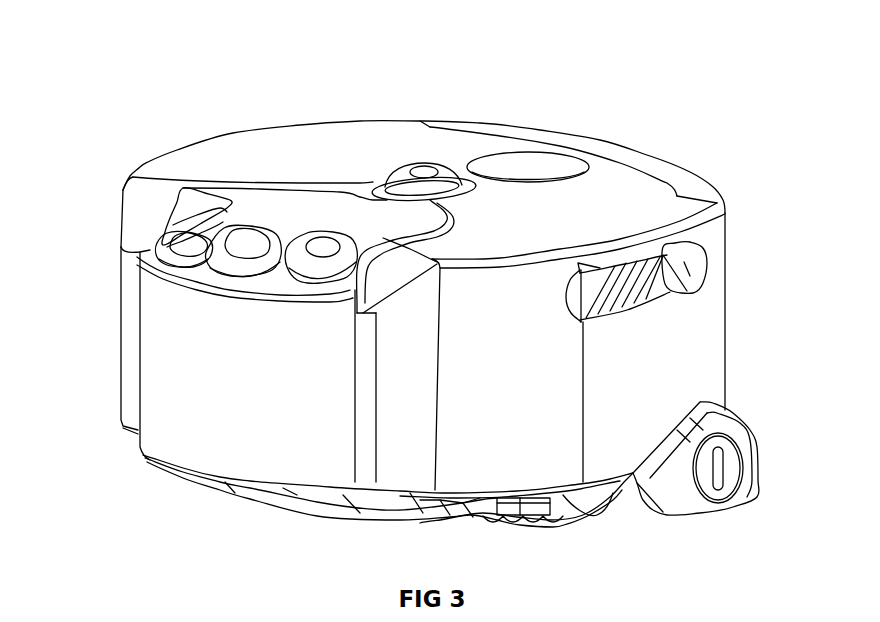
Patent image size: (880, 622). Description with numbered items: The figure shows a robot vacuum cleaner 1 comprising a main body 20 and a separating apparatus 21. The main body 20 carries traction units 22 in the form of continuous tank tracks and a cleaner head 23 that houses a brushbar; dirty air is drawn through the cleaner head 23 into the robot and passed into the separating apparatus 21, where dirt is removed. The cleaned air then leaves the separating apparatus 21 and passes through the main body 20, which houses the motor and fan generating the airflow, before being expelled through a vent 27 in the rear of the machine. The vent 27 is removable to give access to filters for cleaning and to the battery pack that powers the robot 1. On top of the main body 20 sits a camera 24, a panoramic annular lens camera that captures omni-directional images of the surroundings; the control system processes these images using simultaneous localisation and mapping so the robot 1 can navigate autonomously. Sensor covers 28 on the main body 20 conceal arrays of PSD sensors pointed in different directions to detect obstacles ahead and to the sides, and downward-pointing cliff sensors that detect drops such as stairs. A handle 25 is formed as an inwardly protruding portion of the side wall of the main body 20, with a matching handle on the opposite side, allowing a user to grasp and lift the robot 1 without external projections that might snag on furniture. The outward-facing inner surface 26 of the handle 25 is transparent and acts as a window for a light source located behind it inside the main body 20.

The robot vacuum cleaner 1 is at (133, 108).
The main body 20 is at (357, 140).
The separating apparatus 21 is at (200, 420).
The traction units 22 is at (560, 527).
The cleaner head 23 is at (751, 452).
The camera 24 is at (440, 182).
The handle 25 is at (687, 263).
The inner surface 26 is at (670, 291).
The vent 27 is at (635, 153).
The sensor covers 28 is at (127, 352).